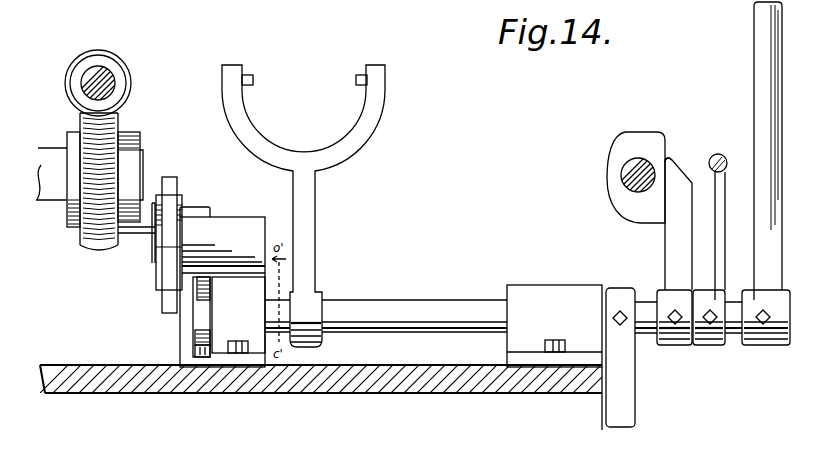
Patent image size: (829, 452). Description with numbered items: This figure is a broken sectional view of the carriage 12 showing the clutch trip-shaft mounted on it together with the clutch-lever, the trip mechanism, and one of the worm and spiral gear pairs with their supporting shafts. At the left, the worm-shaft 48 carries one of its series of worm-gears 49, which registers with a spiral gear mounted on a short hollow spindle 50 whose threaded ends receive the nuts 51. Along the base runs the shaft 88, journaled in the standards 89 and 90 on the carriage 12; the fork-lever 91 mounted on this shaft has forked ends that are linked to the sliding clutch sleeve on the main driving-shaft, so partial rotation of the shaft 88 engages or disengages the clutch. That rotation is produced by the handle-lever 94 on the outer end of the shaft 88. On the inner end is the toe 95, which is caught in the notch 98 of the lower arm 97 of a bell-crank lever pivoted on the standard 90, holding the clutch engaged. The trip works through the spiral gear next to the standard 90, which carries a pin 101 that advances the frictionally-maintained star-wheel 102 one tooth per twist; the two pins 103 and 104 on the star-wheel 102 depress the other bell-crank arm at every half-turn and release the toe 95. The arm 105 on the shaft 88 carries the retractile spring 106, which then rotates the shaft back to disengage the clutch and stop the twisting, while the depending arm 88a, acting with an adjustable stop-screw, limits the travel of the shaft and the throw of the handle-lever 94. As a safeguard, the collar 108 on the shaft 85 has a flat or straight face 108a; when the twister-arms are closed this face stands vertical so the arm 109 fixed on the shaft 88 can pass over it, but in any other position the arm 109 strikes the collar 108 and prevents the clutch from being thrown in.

The carriage 12 is at (400, 366).
The worm-shaft 48 is at (82, 84).
The worm-gears 49 is at (99, 58).
The hollow spindles 50 is at (160, 149).
The nuts 51 is at (137, 134).
The shaft 85 is at (622, 181).
The shaft 88 is at (503, 316).
The arm 88a is at (617, 357).
The standard 89 is at (554, 357).
The standard 90 is at (222, 292).
The fork-lever 91 is at (316, 222).
The handle-lever 94 is at (755, 88).
The toe 95 is at (194, 342).
The lower arm 97 is at (212, 291).
The notch 98 is at (196, 354).
The pin 101 is at (140, 236).
The star-wheel 102 is at (162, 305).
The pin 103 is at (210, 212).
The pin 104 is at (190, 288).
The arm 105 is at (727, 200).
The retractile spring 106 is at (737, 151).
The collar 108 is at (636, 170).
The flat or straight face 108a is at (667, 160).
The arm 109 is at (675, 251).